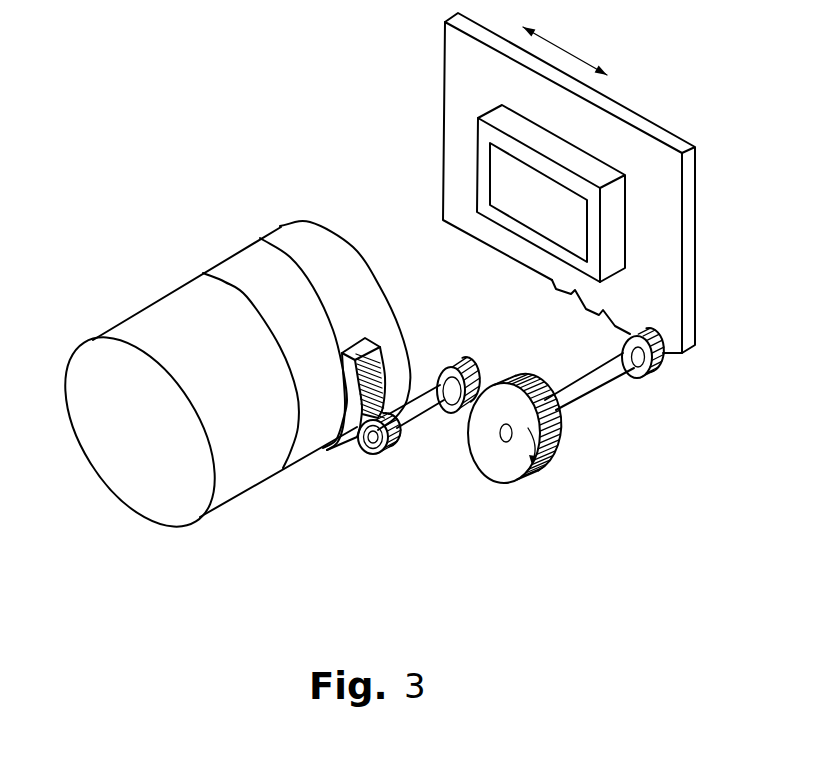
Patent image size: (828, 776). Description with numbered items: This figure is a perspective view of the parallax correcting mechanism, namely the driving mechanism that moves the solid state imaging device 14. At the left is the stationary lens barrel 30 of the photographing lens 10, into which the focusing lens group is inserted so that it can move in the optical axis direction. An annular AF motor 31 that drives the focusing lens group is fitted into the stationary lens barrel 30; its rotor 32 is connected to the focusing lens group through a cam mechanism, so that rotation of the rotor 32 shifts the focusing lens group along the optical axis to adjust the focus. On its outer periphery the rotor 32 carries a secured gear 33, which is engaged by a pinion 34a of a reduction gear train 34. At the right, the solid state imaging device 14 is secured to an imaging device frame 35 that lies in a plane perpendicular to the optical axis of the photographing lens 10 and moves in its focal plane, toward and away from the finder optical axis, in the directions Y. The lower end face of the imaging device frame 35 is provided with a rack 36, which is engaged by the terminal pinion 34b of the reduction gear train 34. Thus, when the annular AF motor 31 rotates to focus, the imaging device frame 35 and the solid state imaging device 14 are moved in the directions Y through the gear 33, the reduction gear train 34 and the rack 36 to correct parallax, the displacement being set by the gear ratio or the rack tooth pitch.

The photographing lens 10 is at (176, 186).
The solid state imaging device 14 is at (567, 165).
The stationary lens barrel 30 is at (143, 309).
The annular AF motor 31 is at (227, 280).
The rotor 32 is at (281, 258).
The gear 33 is at (388, 347).
The reduction gear train 34 is at (680, 400).
The pinion 34a is at (380, 458).
The terminal pinion 34b is at (637, 378).
The imaging device frame 35 is at (695, 233).
The rack 36 is at (663, 358).